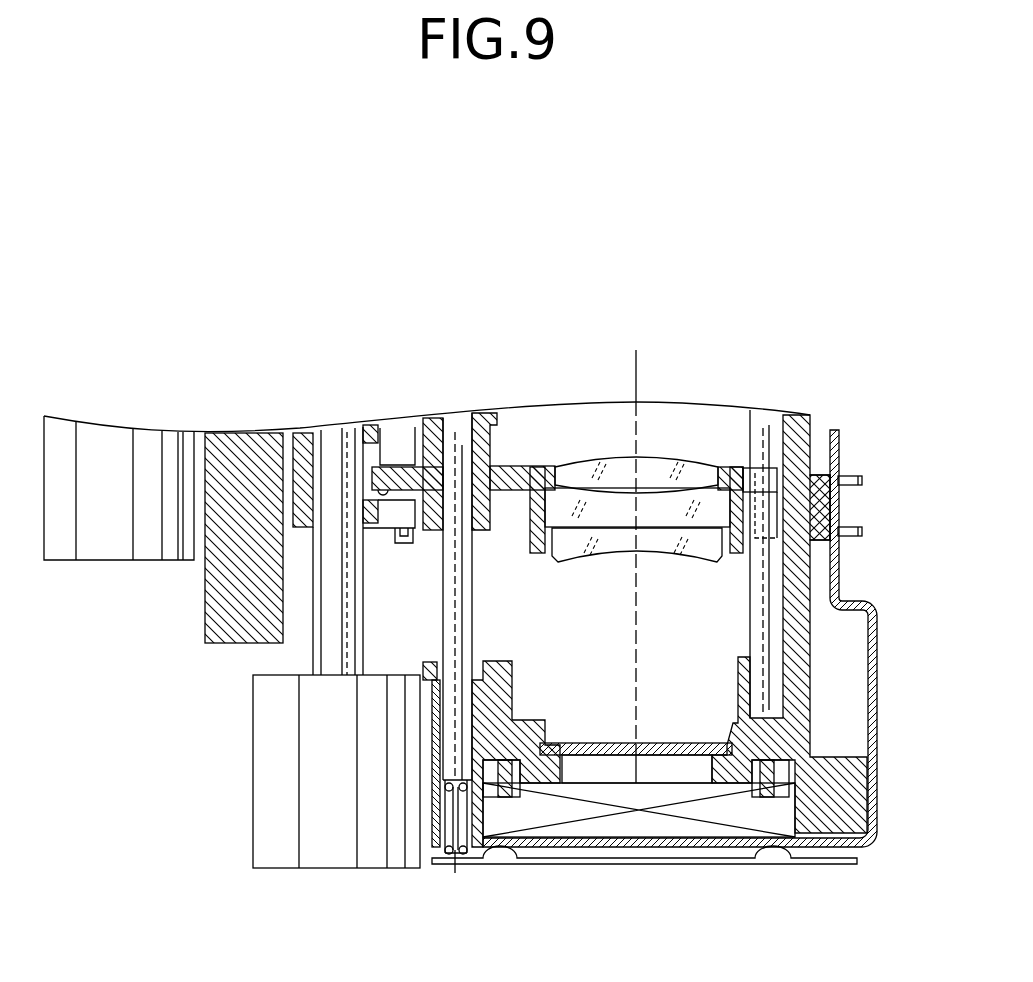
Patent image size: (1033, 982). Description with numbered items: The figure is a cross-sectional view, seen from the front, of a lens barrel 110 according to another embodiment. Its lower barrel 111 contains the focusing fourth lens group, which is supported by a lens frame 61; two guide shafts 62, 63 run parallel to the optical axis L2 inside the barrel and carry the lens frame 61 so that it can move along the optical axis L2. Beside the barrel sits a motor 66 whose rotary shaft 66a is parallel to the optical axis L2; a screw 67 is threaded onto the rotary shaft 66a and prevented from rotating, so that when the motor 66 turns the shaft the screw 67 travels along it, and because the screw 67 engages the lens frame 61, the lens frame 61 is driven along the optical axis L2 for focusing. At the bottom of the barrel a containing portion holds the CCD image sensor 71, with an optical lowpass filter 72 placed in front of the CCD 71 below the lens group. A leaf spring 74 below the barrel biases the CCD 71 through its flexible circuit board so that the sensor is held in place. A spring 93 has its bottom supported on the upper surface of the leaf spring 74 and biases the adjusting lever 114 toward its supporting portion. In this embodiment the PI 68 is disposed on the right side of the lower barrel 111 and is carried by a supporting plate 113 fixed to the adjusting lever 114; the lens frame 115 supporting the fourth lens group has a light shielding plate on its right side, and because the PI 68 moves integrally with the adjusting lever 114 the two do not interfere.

The lens barrel 110 is at (679, 293).
The lower barrel 111 is at (824, 409).
The lens frame 61 is at (655, 438).
The guide shaft 62 is at (467, 596).
The guide shaft 63 is at (760, 598).
The motor 66 is at (253, 770).
The rotary shaft 66a is at (338, 649).
The screw 67 is at (305, 528).
The PI 68 is at (839, 449).
The CCD image sensor 71 is at (667, 827).
The optical lowpass filter 72 is at (620, 742).
The leaf spring 74 is at (823, 864).
The spring 93 is at (463, 857).
The supporting plate 113 is at (877, 698).
The adjusting lever 114 is at (419, 836).
The lens frame 115 is at (530, 553).
The optical axis L2 is at (635, 381).